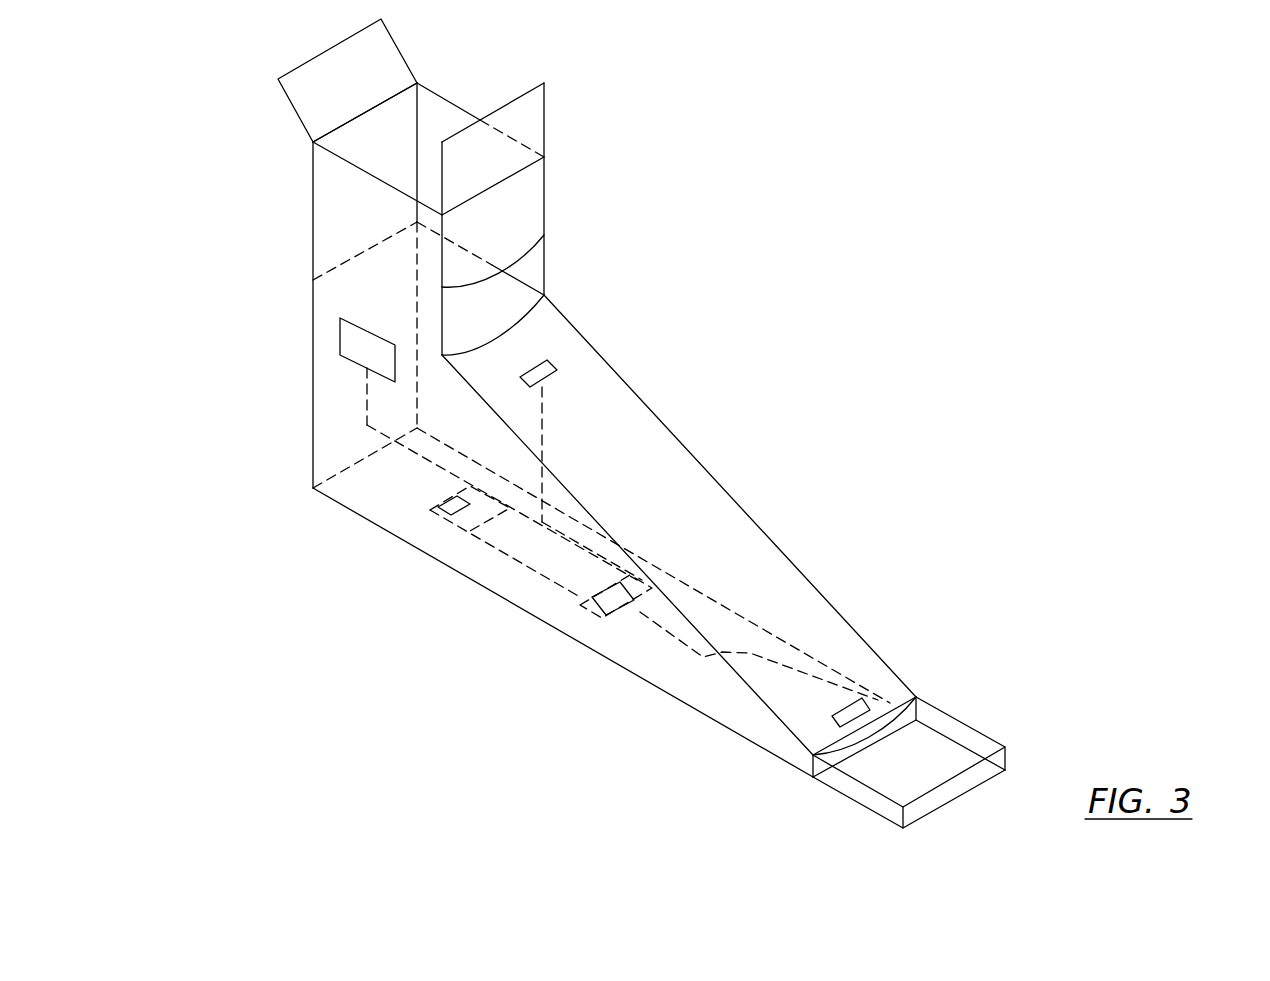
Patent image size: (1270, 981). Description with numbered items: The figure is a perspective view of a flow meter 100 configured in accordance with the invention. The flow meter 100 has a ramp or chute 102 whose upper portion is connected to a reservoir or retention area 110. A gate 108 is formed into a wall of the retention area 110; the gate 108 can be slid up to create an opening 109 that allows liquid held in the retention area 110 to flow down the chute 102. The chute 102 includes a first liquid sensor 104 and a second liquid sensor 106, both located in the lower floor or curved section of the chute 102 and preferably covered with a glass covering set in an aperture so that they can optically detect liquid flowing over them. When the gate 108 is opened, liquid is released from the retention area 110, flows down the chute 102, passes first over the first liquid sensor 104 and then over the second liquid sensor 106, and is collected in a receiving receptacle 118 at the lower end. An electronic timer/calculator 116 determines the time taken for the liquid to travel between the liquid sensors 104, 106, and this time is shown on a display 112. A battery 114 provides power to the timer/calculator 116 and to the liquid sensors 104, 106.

The flow meter 100 is at (1103, 62).
The ramp or chute 102 is at (690, 452).
The first liquid sensor 104 is at (552, 366).
The second liquid sensor 106 is at (864, 700).
The gate 108 is at (532, 118).
The opening 109 is at (532, 273).
The reservoir or retention area 110 is at (440, 117).
The display 112 is at (343, 363).
The battery 114 is at (445, 508).
The electronic timer/calculator 116 is at (617, 613).
The receiving receptacle 118 is at (933, 738).